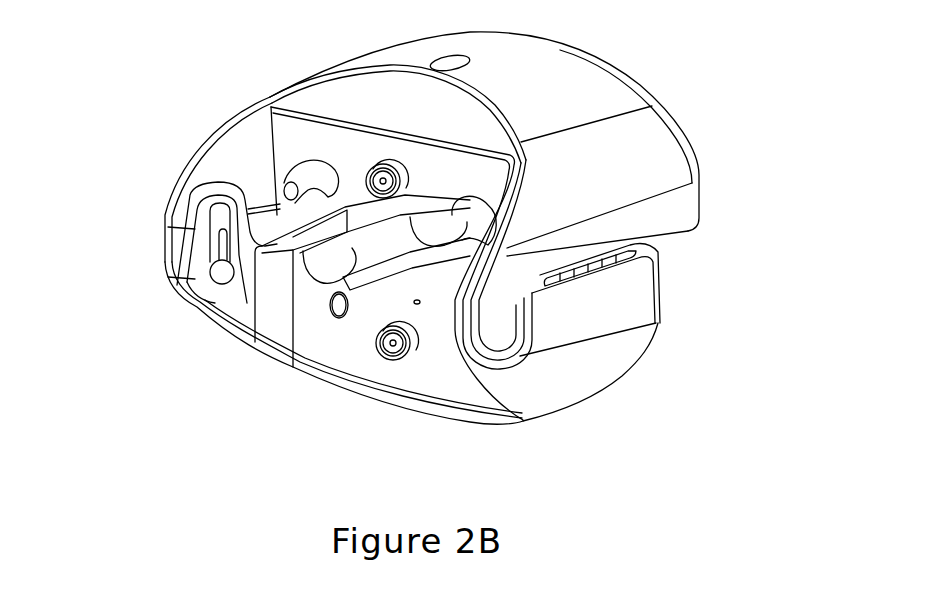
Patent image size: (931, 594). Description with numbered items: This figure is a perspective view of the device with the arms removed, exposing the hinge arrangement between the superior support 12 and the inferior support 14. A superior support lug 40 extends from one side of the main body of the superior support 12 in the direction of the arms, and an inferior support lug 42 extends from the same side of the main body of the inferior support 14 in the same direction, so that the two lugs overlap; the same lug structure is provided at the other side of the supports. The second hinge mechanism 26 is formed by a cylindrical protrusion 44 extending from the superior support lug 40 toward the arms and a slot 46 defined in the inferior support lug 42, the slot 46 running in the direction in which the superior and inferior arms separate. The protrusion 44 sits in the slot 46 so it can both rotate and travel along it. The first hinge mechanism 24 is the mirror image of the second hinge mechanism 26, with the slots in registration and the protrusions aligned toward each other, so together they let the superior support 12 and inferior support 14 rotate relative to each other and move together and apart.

The superior support 12 is at (663, 142).
The inferior support 14 is at (616, 353).
The first hinge mechanism 24 is at (514, 313).
The second hinge mechanism 26 is at (155, 244).
The superior support lug 40 is at (217, 150).
The inferior support lug 42 is at (187, 262).
The cylindrical protrusion 44 is at (213, 283).
The slot 46 is at (237, 290).